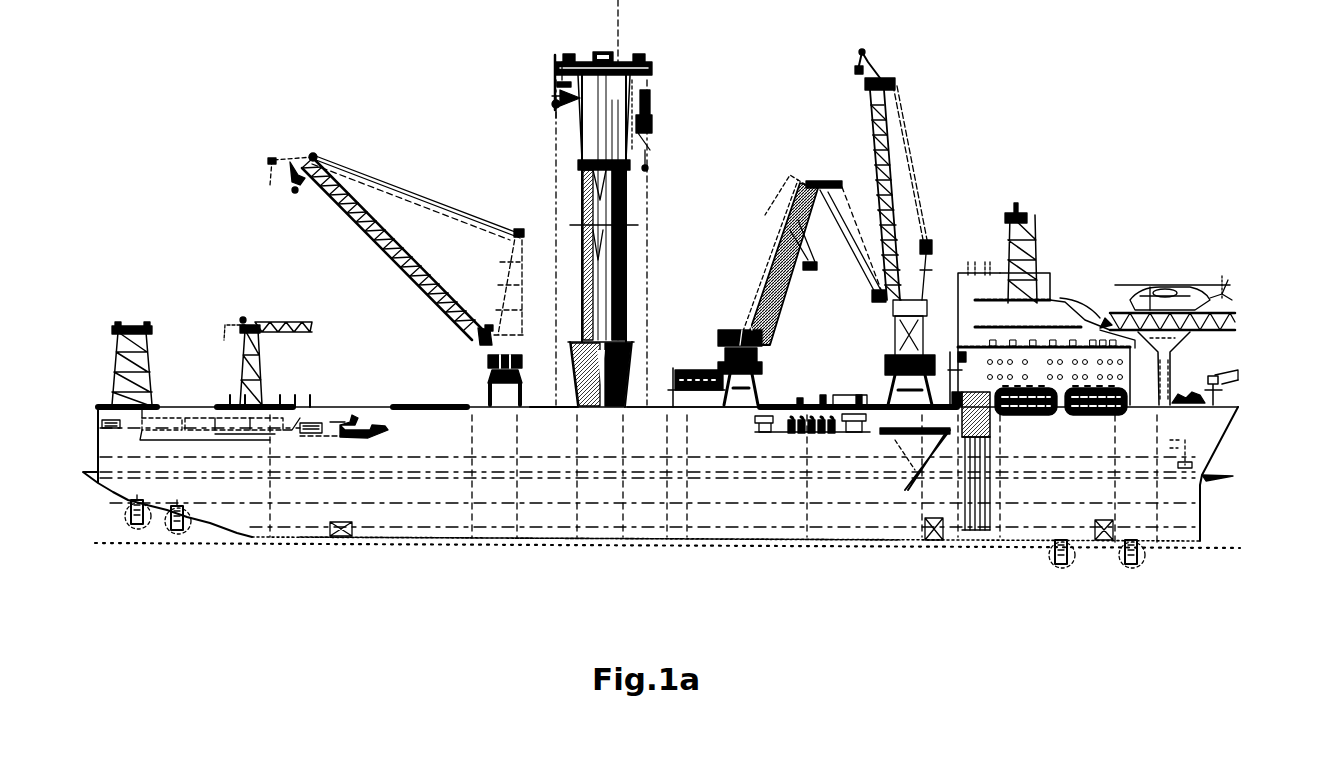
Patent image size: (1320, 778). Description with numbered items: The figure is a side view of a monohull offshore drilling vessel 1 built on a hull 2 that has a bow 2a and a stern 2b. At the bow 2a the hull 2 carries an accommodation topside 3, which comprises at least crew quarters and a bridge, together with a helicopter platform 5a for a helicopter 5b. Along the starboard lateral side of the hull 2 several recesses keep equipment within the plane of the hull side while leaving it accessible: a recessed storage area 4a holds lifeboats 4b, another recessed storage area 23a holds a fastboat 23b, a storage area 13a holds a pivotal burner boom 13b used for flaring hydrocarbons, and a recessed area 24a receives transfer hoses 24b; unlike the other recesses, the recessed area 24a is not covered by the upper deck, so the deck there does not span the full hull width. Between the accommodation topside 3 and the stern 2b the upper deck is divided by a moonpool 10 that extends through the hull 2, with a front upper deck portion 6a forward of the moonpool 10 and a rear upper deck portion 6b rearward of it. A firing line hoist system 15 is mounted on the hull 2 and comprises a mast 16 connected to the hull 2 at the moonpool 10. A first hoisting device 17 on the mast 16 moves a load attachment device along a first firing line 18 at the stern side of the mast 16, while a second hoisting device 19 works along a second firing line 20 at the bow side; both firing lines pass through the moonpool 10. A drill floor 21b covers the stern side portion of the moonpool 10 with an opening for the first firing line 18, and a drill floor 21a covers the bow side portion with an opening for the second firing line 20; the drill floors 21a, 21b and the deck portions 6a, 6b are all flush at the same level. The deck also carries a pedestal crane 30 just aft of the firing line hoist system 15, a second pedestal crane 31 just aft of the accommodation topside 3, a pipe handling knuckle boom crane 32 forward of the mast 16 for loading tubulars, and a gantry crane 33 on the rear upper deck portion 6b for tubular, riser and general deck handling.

The monohull offshore drilling vessel 1 is at (484, 158).
The hull 2 is at (701, 497).
The bow 2a is at (1242, 423).
The stern 2b is at (107, 510).
The accommodation topside 3 is at (1062, 318).
The recessed storage area 4a is at (1120, 392).
The lifeboats 4b is at (1097, 423).
The helicopter platform 5a is at (1208, 303).
The helicopter 5b is at (1165, 290).
The front upper deck portion 6a is at (782, 407).
The rear upper deck portion 6b is at (349, 405).
The moonpool 10 is at (595, 510).
The storage area 13a is at (193, 418).
The burner boom 13b is at (171, 420).
The firing line hoist system 15 is at (667, 297).
The mast 16 is at (630, 204).
The first hoisting device 17 is at (545, 92).
The first firing line 18 is at (553, 172).
The second hoisting device 19 is at (662, 128).
The second firing line 20 is at (652, 248).
The drill floor 21a is at (660, 405).
The drill floor 21b is at (537, 407).
The recessed storage area 23a is at (343, 432).
The fastboat 23b is at (370, 433).
The recessed area 24a is at (787, 433).
The transfer hoses 24b is at (832, 432).
The pedestal crane 30 is at (516, 303).
The second pedestal crane 31 is at (912, 283).
The pipe handling knuckle boom crane 32 is at (728, 350).
The gantry crane 33 is at (133, 330).